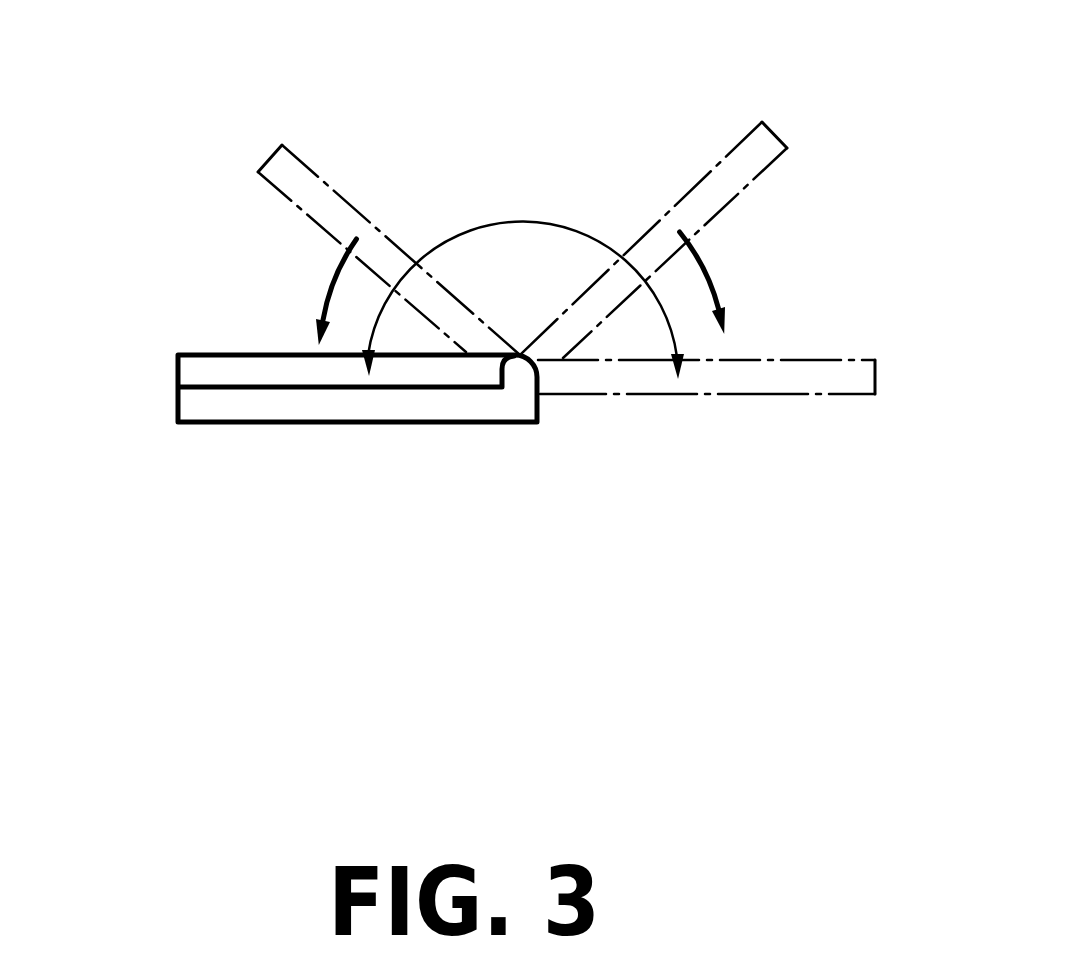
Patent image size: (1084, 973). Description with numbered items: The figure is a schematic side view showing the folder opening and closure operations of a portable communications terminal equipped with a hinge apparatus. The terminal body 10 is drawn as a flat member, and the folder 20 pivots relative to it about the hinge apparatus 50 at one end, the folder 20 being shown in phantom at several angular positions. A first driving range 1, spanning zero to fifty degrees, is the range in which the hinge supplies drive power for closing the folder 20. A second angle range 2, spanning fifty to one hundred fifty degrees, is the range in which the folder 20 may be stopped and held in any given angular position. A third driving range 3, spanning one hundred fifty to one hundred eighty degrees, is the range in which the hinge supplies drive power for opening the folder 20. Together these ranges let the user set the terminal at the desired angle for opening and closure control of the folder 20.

The driving range for closing 1 is at (368, 327).
The angle range allowing the folder to stop 2 is at (542, 220).
The driving range for opening 3 is at (672, 312).
The base body 10 is at (277, 408).
The folder 20 is at (228, 378).
The hinge portion 50 is at (522, 460).